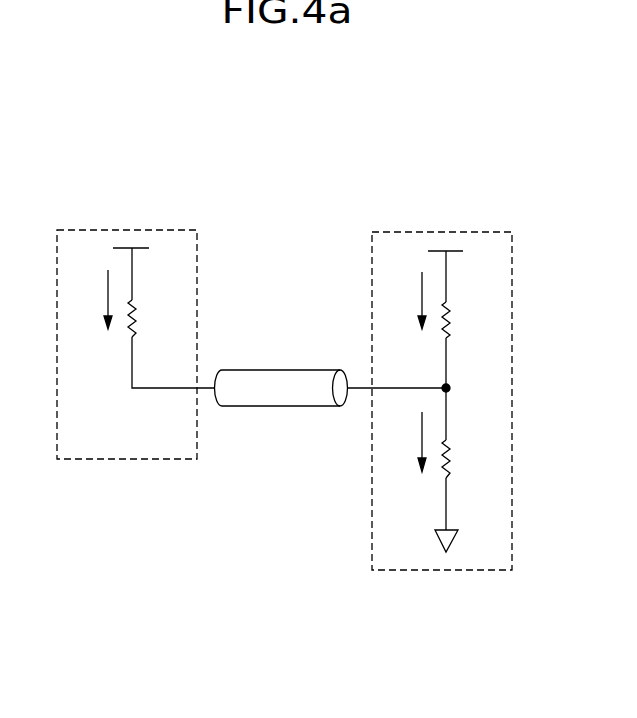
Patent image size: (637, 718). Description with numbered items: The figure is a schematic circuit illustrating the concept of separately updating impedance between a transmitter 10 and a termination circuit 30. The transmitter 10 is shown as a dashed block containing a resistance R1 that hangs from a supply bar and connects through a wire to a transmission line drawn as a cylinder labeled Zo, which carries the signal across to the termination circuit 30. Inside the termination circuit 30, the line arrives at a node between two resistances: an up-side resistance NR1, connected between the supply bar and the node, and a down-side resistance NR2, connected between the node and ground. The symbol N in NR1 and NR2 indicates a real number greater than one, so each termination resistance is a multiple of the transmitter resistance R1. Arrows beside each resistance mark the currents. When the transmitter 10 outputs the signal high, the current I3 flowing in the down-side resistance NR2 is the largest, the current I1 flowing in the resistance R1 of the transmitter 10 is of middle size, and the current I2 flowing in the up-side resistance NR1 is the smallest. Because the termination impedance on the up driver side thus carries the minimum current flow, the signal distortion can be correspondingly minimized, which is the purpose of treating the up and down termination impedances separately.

The transmitter 10 is at (136, 391).
The termination circuit 30 is at (442, 449).
The resistance of the transmitter R1 is at (151, 318).
The resistance in the up side of the termination circuit NR1 is at (475, 320).
The resistance of the down side of the termination circuit NR2 is at (475, 459).
The transmission line of characteristic impedance Zo is at (330, 388).
The current flowing in the resistance R1 I1 is at (94, 299).
The current flowing in the resistance NR1 I2 is at (408, 300).
The current flowing in the resistance NR2 I3 is at (408, 442).